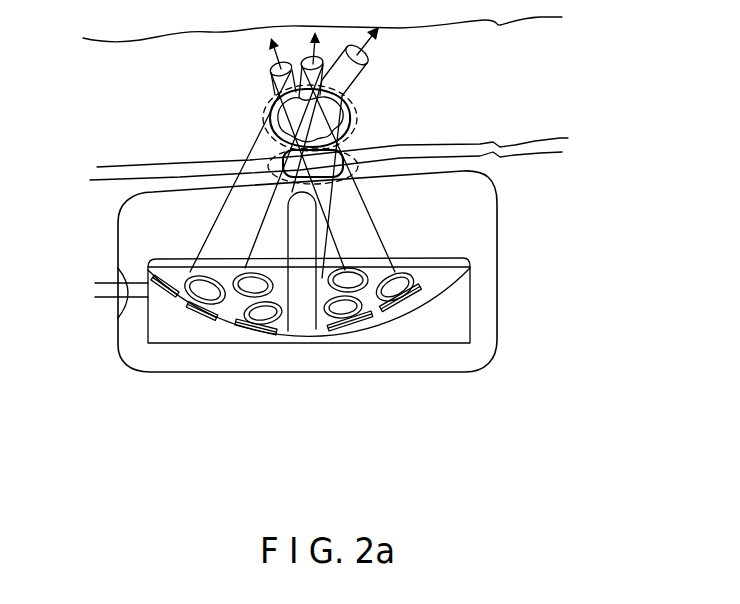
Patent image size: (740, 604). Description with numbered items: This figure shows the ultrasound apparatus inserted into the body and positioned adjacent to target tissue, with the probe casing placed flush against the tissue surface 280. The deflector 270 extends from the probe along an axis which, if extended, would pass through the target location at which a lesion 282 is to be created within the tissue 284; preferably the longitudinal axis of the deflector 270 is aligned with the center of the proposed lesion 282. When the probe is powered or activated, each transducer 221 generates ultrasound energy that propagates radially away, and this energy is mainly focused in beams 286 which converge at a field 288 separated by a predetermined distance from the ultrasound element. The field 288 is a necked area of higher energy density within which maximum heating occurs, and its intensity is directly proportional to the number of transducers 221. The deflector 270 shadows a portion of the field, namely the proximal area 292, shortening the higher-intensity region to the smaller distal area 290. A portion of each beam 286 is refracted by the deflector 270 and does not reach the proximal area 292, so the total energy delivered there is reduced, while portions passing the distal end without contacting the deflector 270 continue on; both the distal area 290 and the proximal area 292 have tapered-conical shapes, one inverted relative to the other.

The transducer 221 is at (405, 320).
The deflector 270 is at (302, 331).
The tissue surface 280 is at (557, 170).
The lesion 282 is at (370, 114).
The tissue 284 is at (499, 99).
The beam 286 is at (235, 258).
The field 288 is at (252, 108).
The distal area 290 is at (362, 134).
The proximal area 292 is at (365, 164).